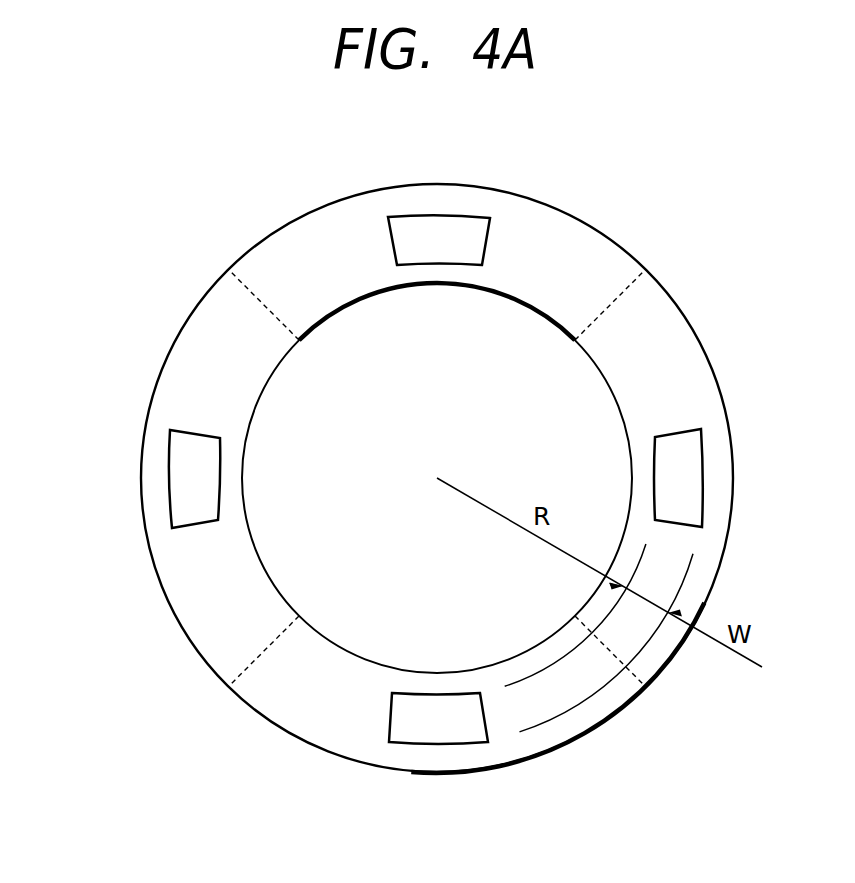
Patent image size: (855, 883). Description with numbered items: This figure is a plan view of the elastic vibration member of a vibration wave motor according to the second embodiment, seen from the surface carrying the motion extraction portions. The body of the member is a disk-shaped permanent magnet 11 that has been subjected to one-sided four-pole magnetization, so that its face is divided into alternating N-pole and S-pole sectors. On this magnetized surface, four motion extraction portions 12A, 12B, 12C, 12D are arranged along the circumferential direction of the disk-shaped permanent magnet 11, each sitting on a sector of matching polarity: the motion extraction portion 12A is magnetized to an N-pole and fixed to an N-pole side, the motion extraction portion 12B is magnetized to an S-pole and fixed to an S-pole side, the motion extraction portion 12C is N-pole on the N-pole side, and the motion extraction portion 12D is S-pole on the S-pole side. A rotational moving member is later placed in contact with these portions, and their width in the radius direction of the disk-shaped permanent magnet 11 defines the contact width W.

The disk-shaped permanent magnet 11 is at (305, 238).
The motion extraction portion 12A is at (433, 217).
The motion extraction portion 12B is at (698, 480).
The motion extraction portion 12C is at (433, 742).
The motion extraction portion 12D is at (172, 480).